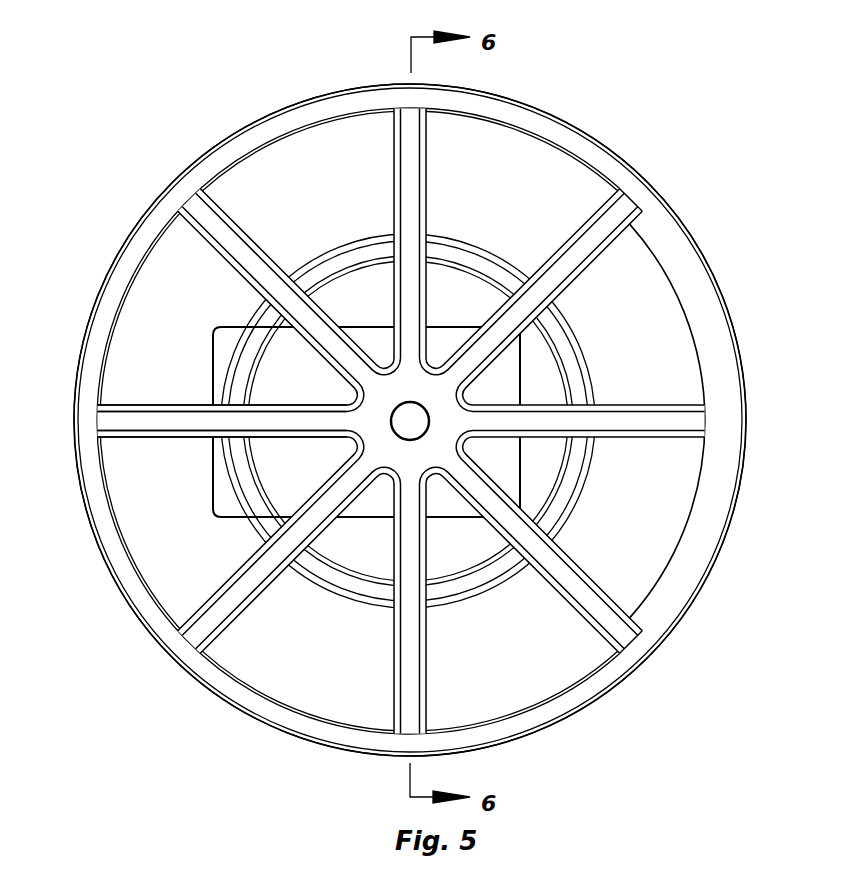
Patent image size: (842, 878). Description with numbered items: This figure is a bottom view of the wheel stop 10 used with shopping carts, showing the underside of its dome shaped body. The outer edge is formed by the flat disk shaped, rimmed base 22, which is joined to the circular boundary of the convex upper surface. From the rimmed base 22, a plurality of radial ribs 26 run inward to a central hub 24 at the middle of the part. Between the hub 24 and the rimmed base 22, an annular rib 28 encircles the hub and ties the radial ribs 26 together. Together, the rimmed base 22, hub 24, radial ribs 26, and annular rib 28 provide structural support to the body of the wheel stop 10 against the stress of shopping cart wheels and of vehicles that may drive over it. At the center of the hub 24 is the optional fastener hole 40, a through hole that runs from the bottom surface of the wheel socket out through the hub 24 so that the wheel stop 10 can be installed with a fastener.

The wheel stop 10 is at (140, 130).
The rimmed base 22 is at (612, 681).
The central hub 24 is at (392, 390).
The radial ribs 26 is at (162, 420).
The annular rib 28 is at (333, 578).
The fastener hole 40 is at (432, 404).